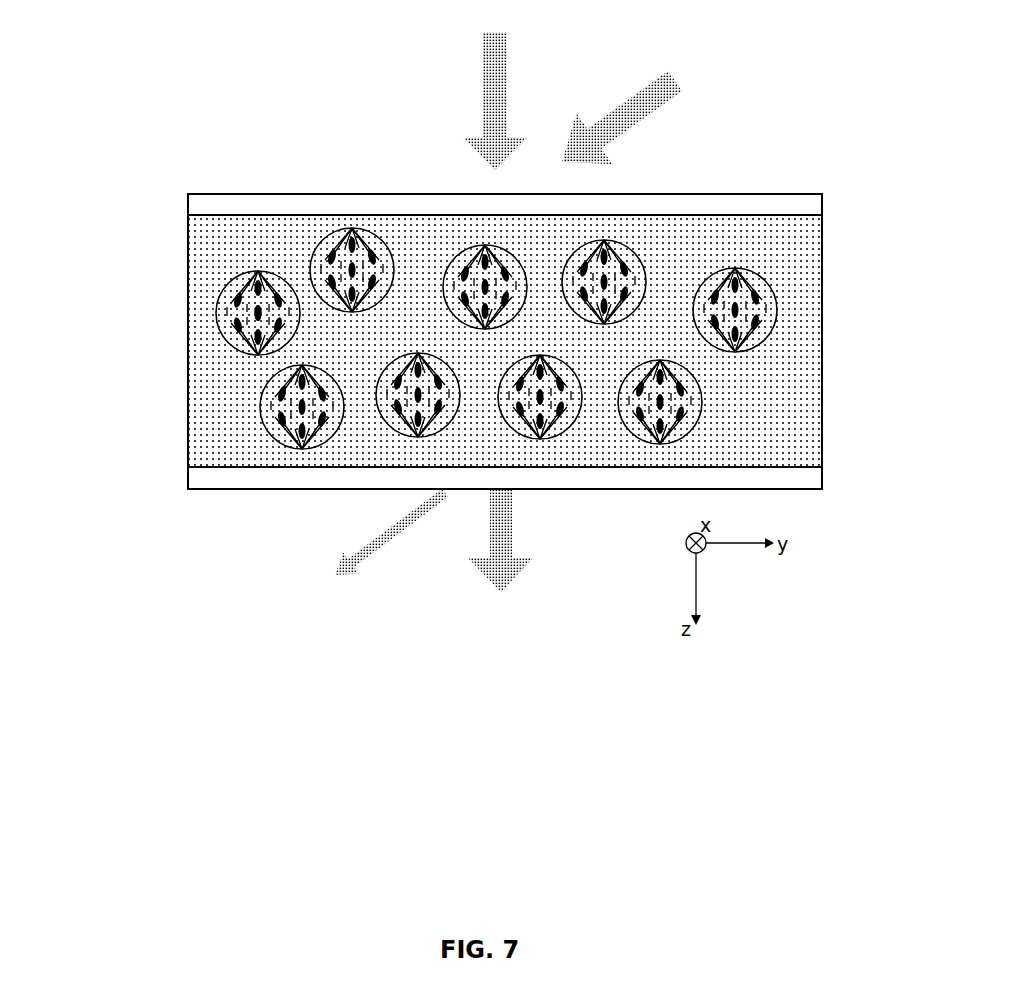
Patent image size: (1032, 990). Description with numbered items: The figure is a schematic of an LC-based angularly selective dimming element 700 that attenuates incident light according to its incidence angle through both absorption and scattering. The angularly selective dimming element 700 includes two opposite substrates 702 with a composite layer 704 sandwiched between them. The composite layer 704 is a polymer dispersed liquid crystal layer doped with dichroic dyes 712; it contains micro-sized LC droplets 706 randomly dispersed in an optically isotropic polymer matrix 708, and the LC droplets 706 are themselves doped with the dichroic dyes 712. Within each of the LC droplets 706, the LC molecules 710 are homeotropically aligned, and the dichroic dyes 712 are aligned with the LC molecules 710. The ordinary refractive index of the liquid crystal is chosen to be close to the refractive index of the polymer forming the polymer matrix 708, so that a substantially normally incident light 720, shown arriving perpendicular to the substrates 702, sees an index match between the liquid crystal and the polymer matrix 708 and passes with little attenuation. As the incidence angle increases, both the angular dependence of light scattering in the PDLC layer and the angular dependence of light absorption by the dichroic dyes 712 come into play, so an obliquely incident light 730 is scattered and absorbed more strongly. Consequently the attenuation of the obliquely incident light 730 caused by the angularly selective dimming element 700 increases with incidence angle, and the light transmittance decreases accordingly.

The angularly selective dimming element 700 is at (256, 108).
The substrate 702 is at (213, 197).
The composite layer 704 is at (188, 373).
The LC droplet 706 is at (313, 252).
The polymer matrix 708 is at (220, 420).
The LC molecule 710 is at (757, 295).
The dichroic dye 712 is at (256, 313).
The normally incident light 720 is at (497, 50).
The obliquely incident light 730 is at (652, 105).